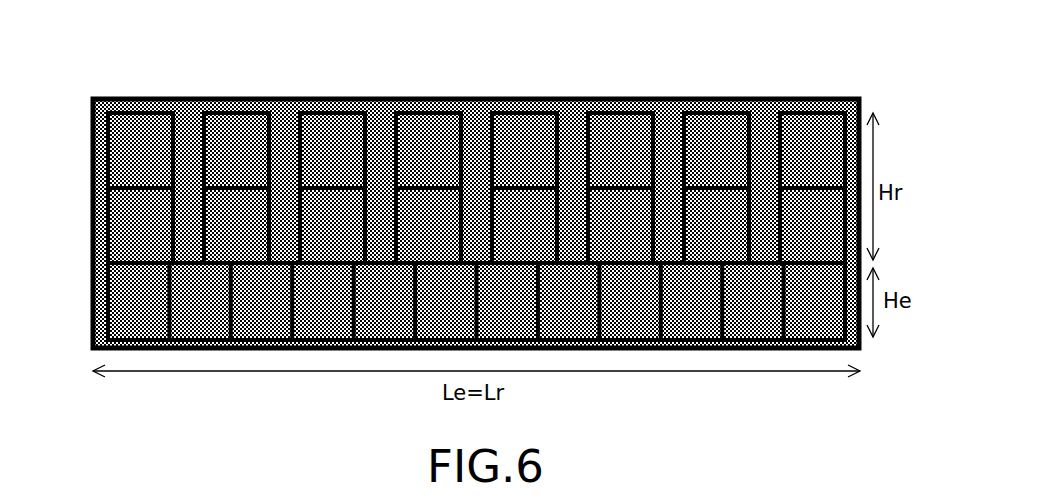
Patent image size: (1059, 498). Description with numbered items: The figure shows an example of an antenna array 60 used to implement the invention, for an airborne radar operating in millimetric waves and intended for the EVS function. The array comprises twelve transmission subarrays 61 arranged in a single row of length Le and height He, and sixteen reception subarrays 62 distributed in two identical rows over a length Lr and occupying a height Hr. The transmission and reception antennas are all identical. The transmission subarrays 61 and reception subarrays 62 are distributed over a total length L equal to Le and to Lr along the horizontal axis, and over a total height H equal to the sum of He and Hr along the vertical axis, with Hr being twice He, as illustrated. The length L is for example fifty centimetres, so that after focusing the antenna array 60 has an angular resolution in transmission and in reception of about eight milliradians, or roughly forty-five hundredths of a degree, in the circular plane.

The antenna array 60 is at (845, 80).
The transmission subarrays 61 is at (115, 302).
The reception subarrays 62 is at (122, 151).